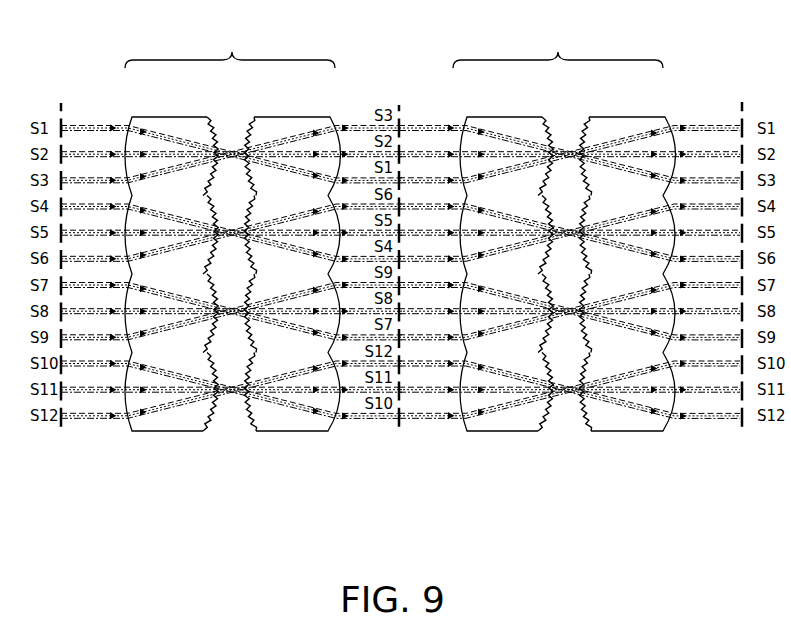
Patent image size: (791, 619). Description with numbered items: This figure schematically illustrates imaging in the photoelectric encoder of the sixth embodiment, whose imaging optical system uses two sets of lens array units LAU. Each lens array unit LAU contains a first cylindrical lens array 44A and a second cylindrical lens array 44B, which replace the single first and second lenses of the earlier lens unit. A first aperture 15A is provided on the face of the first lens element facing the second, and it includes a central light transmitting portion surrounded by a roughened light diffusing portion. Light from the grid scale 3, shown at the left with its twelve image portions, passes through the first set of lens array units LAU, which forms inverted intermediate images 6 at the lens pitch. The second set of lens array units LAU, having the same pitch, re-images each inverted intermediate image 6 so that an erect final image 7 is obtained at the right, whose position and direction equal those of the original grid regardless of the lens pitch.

The grid scale 3 is at (61, 103).
The inverted intermediate image 6 is at (400, 105).
The image 7 is at (742, 102).
The first aperture 15A is at (210, 117).
The first cylindrical lens array 44A is at (172, 431).
The second cylindrical lens array 44B is at (262, 431).
The lens array unit LAU is at (394, 48).